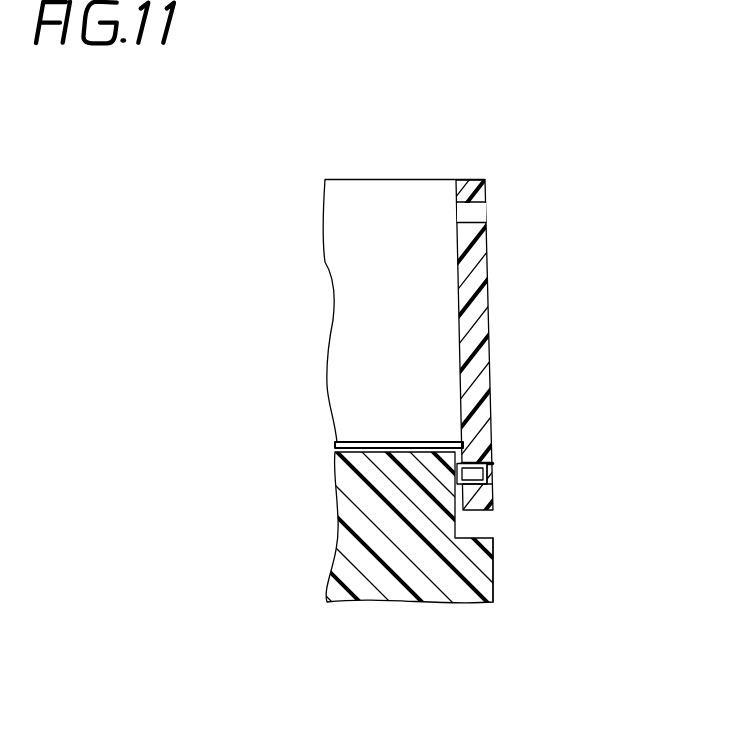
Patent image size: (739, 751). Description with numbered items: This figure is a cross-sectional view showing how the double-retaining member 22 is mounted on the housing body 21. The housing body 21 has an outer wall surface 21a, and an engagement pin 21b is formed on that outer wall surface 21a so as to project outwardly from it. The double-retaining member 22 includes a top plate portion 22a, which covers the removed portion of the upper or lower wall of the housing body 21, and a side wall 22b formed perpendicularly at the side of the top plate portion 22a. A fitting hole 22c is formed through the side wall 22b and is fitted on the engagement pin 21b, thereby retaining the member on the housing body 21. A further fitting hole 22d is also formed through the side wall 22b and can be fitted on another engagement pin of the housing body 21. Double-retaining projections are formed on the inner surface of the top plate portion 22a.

The housing body 21 is at (353, 548).
The outer wall surface 21a is at (472, 567).
The engagement pin 21b is at (493, 473).
The double-retaining member 22 is at (410, 350).
The top plate portion 22a is at (350, 225).
The side wall 22b is at (483, 253).
The fitting hole 22c is at (493, 482).
The fitting hole 22d is at (462, 207).